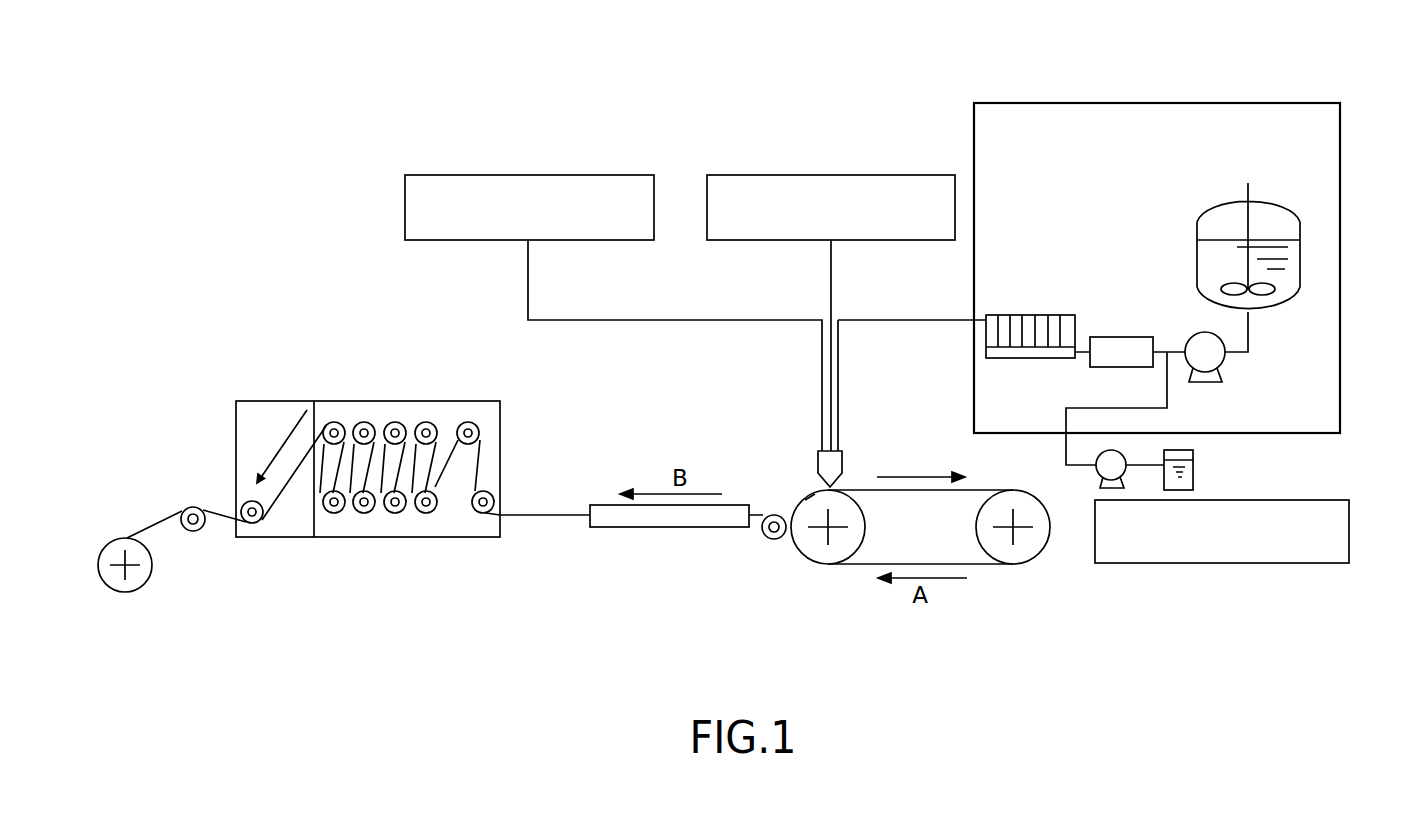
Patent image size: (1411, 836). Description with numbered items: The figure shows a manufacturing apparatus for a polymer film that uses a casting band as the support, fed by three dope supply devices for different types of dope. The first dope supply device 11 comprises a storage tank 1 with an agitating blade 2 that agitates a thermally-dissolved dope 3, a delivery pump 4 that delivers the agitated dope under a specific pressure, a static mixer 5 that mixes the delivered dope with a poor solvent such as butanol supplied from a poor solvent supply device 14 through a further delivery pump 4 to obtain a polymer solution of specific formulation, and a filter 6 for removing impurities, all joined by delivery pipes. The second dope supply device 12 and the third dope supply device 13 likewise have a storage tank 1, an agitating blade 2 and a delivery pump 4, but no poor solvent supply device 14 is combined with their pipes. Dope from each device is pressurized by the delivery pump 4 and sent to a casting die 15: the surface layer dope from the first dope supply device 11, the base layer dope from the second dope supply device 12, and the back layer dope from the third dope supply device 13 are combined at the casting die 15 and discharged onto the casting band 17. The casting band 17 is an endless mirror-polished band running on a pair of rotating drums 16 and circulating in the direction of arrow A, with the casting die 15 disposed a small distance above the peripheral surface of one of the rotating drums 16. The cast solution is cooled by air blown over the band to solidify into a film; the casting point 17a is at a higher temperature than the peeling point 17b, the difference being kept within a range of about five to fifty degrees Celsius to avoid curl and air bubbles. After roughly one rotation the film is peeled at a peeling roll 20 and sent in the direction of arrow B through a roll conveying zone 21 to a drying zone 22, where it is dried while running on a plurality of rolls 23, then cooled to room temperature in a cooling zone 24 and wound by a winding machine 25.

The storage tank 1 is at (1288, 210).
The agitating blade 2 is at (1272, 290).
The thermally-dissolved dope 3 is at (1292, 261).
The delivery pump 4 is at (1200, 333).
The static mixer 5 is at (1137, 337).
The filter 6 is at (1040, 312).
The first dope supply device 11 is at (1223, 102).
The second dope supply device 12 is at (869, 173).
The third dope supply device 13 is at (561, 173).
The poor solvent supply device 14 is at (1193, 458).
The casting die 15 is at (836, 466).
The rotating drums 16 is at (815, 548).
The casting band 17 is at (991, 488).
The casting point 17a is at (845, 480).
The peeling point 17b is at (789, 500).
The peeling roll 20 is at (773, 516).
The roll conveying zone 21 is at (598, 505).
The drying zone 22 is at (394, 400).
The rolls 23 is at (473, 428).
The cooling zone 24 is at (288, 400).
The winding machine 25 is at (107, 538).